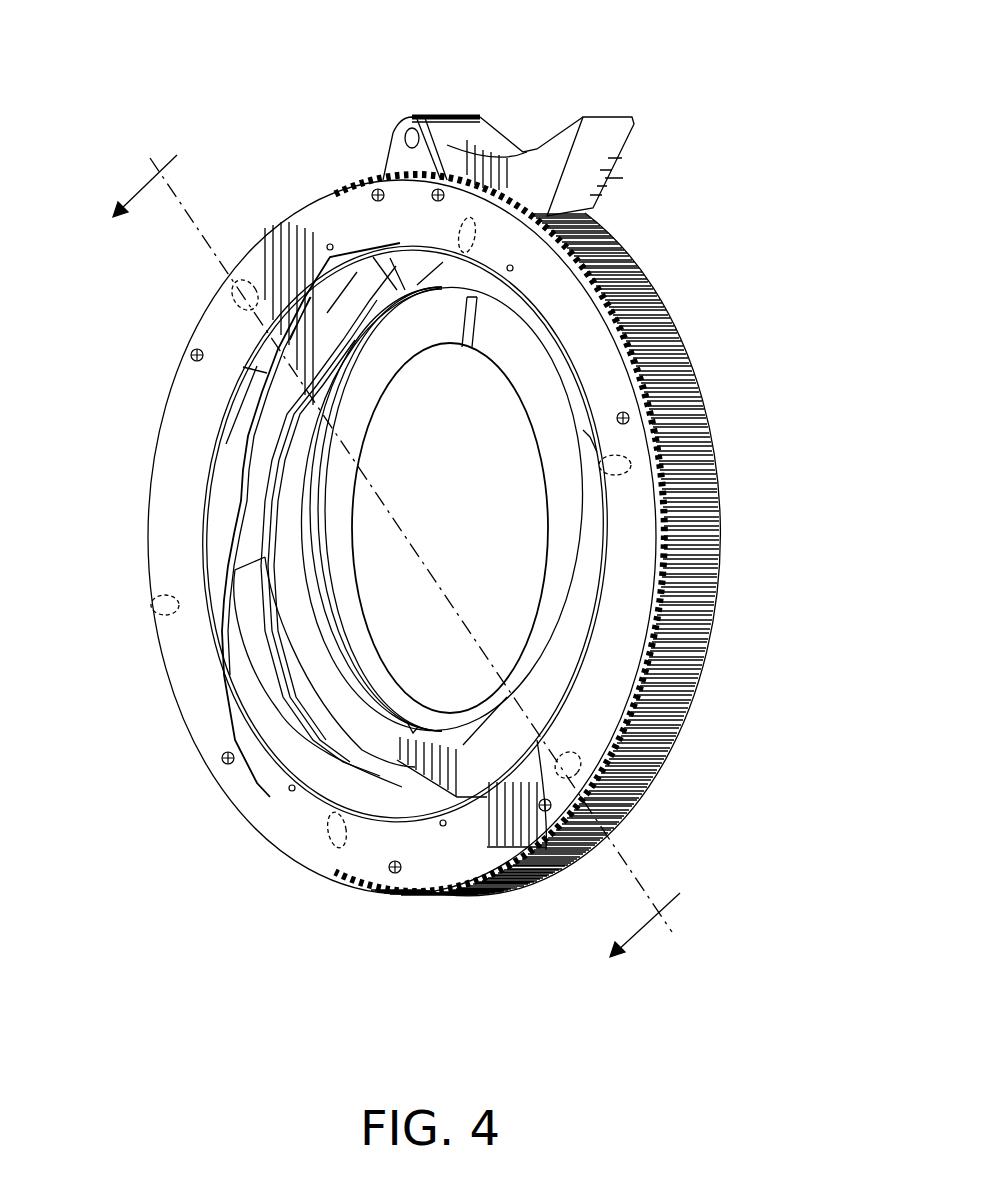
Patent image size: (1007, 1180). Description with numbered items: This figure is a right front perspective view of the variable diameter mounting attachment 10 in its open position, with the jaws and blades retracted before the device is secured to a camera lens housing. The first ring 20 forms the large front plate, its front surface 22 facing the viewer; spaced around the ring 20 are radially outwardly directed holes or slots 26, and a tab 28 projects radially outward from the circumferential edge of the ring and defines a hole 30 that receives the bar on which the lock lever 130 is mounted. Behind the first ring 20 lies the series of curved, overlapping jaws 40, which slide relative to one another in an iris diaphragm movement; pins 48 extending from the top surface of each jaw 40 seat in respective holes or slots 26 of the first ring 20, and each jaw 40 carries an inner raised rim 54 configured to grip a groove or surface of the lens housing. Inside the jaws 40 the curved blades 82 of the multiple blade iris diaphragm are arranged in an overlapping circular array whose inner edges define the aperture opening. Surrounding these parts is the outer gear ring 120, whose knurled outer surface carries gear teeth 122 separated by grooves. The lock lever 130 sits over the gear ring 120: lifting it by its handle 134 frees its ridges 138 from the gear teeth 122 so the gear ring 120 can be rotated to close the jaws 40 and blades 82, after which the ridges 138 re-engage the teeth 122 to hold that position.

The variable diameter mounting attachment 10 is at (419, 526).
The first ring 20 is at (342, 537).
The front surface 22 is at (257, 787).
The holes or slots 26 is at (240, 290).
The tab 28 is at (397, 152).
The hole 30 is at (372, 111).
The jaws 40 is at (240, 458).
The pins 48 is at (528, 762).
The inner raised rim 54 is at (383, 722).
The blades 82 is at (312, 470).
The outer gear ring 120 is at (573, 535).
The gear teeth 122 is at (668, 328).
The lock lever 130 is at (547, 116).
The handle 134 is at (607, 118).
The ridges 138 is at (418, 125).